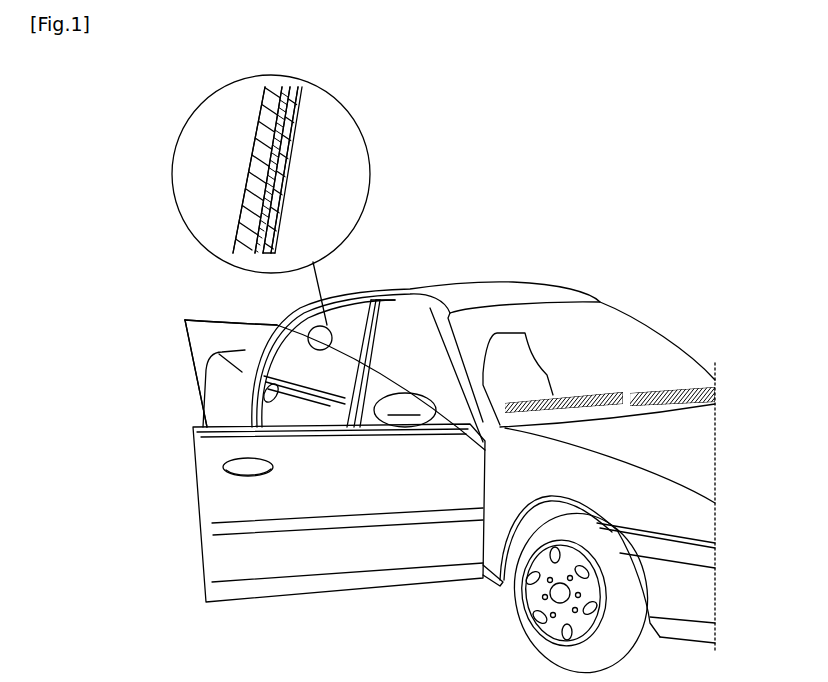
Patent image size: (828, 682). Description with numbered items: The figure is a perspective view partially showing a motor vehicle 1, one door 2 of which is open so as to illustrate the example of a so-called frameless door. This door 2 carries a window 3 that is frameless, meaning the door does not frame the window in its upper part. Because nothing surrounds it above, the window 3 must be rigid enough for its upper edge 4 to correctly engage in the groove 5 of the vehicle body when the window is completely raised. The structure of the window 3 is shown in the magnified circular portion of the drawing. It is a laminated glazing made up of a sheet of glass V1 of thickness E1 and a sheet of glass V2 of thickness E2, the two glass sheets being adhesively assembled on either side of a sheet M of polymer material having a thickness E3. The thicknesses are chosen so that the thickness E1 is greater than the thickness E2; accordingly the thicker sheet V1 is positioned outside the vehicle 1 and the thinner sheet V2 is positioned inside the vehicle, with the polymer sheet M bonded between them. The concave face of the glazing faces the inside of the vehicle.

The motor vehicle 1 is at (446, 612).
The door 2 is at (348, 489).
The window 3 is at (203, 341).
The upper edge 4 is at (240, 331).
The groove 5 is at (401, 320).
The sheet of polymer material M is at (300, 98).
The thickness of sheet of glass V1 E1 is at (253, 137).
The thickness of sheet of glass V2 E2 is at (280, 213).
The thickness of polymer sheet M E3 is at (275, 140).
The sheet of glass V1 is at (257, 210).
The sheet of glass V2 is at (289, 226).